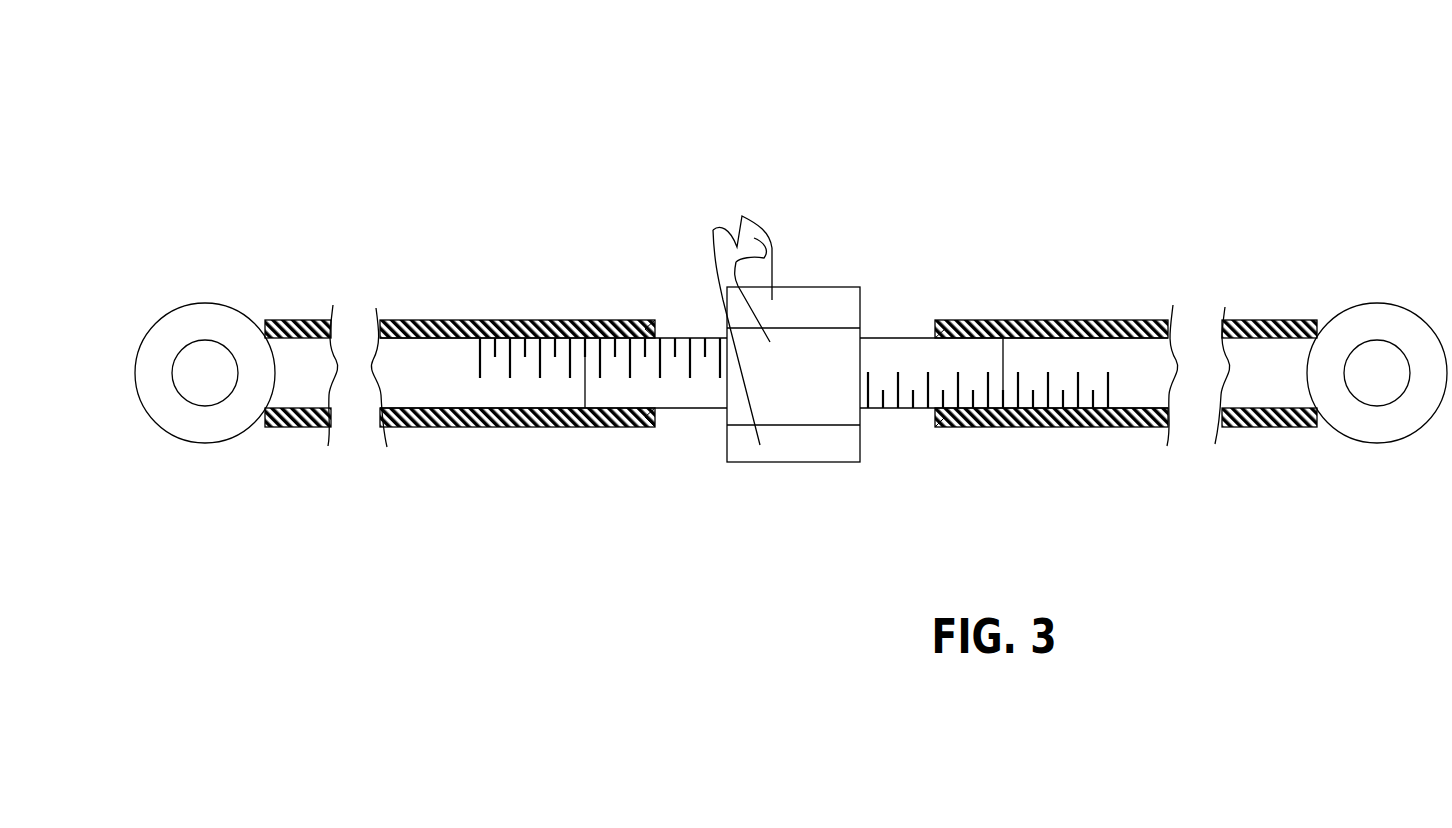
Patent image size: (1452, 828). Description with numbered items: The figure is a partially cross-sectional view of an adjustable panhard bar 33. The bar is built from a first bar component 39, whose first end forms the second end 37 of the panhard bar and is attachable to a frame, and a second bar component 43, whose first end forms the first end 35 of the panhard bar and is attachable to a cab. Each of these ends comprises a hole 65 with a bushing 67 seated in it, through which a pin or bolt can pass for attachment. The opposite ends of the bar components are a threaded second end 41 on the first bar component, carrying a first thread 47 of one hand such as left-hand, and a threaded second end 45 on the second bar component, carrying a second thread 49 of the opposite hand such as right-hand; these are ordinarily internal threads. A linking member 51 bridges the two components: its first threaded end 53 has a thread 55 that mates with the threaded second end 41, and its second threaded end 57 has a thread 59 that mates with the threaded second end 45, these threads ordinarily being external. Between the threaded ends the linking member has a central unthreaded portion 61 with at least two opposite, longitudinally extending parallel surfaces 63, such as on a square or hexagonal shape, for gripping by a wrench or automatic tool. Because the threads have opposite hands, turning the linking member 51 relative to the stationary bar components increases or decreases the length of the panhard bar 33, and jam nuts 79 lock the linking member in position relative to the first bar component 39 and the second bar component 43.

The adjustable panhard bar 33 is at (1032, 225).
The first end of the adjustable panhard bar 35 is at (192, 300).
The second end of the adjustable panhard bar 37 is at (1378, 301).
The first bar component 39 is at (1140, 298).
The threaded second end of the first bar component 41 is at (970, 318).
The second bar component 43 is at (488, 285).
The threaded second end of the second bar component 45 is at (608, 318).
The first thread 47 is at (1022, 427).
The second thread 49 is at (557, 368).
The linking member 51 is at (777, 495).
The first threaded end of the linking member 53 is at (899, 418).
The thread of the first threaded end 55 is at (888, 390).
The second threaded end of the linking member 57 is at (681, 414).
The thread of the second threaded end 59 is at (703, 350).
The central unthreaded portion 61 is at (801, 298).
The longitudinally extending parallel surfaces 63 is at (742, 312).
The hole 65 is at (210, 370).
The bushing 67 is at (172, 413).
The jam nuts 79 is at (643, 422).